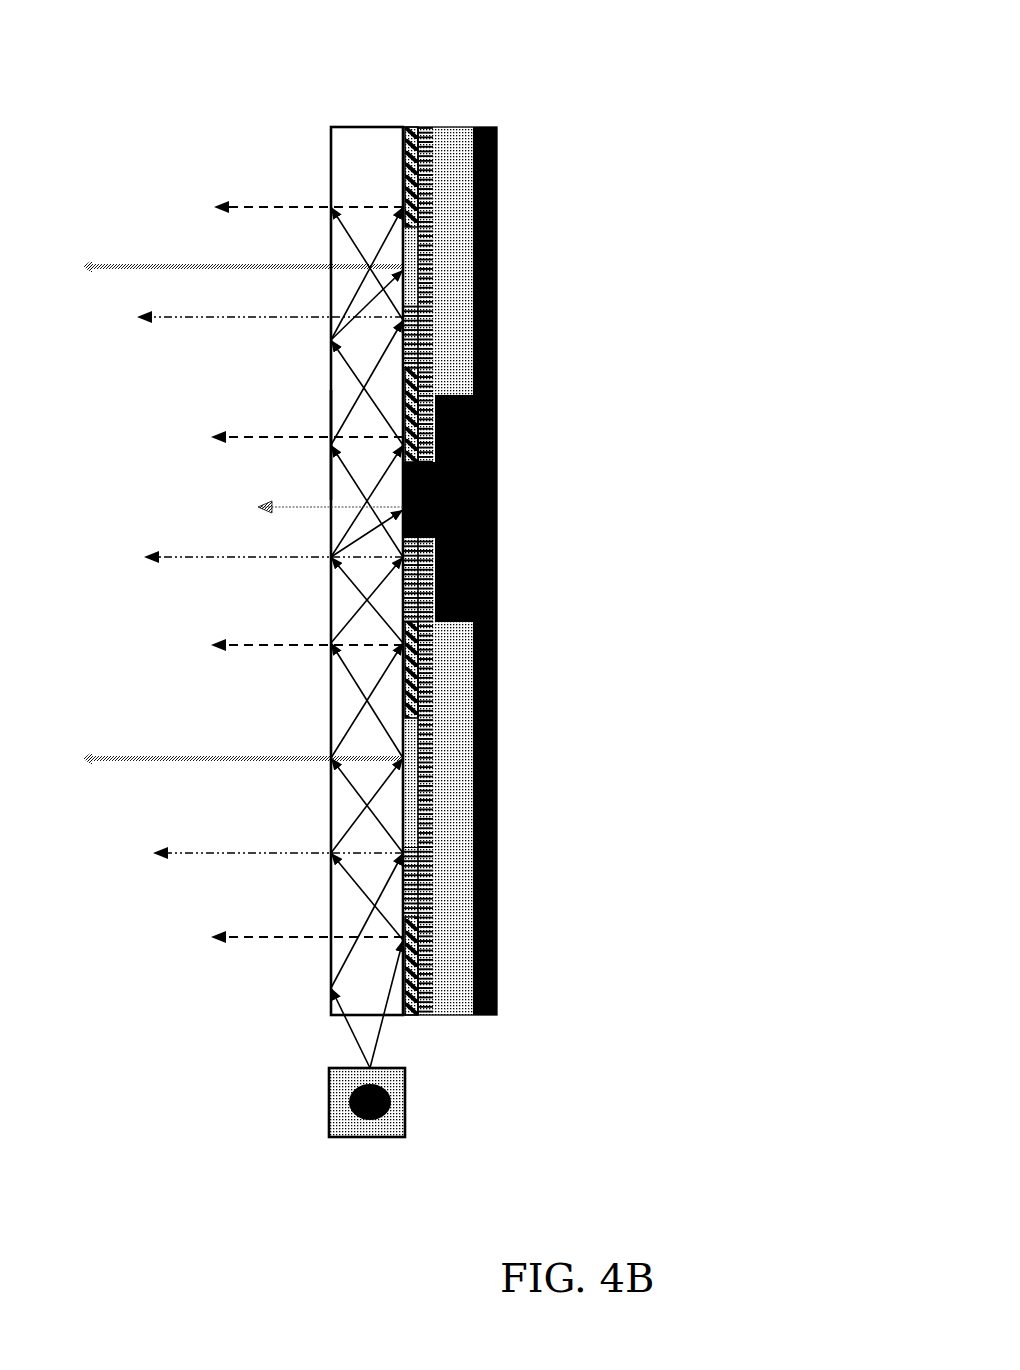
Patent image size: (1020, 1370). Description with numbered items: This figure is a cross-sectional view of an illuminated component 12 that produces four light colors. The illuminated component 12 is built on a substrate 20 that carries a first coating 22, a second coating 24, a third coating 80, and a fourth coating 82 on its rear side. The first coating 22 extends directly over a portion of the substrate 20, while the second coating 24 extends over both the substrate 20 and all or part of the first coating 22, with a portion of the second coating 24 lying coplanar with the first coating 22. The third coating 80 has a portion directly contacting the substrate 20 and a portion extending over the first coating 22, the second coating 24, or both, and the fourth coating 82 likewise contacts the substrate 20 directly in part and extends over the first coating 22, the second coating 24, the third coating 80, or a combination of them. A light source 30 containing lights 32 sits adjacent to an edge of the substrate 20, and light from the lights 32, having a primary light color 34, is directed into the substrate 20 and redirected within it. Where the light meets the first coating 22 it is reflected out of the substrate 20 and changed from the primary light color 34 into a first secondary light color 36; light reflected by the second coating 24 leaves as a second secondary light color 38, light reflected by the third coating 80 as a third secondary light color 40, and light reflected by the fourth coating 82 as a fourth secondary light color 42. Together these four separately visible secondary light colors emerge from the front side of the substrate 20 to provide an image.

The illuminated component 12 is at (553, 203).
The substrate 20 is at (331, 163).
The first coating 22 is at (407, 1016).
The second coating 24 is at (416, 127).
The light source 30 is at (366, 1136).
The lights 32 is at (390, 1107).
The primary light color 34 is at (331, 418).
The first secondary light color 36 is at (245, 937).
The second secondary light color 38 is at (240, 852).
The third secondary light color 40 is at (205, 757).
The fourth secondary light color 42 is at (257, 507).
The third coating 80 is at (460, 127).
The fourth coating 82 is at (497, 507).